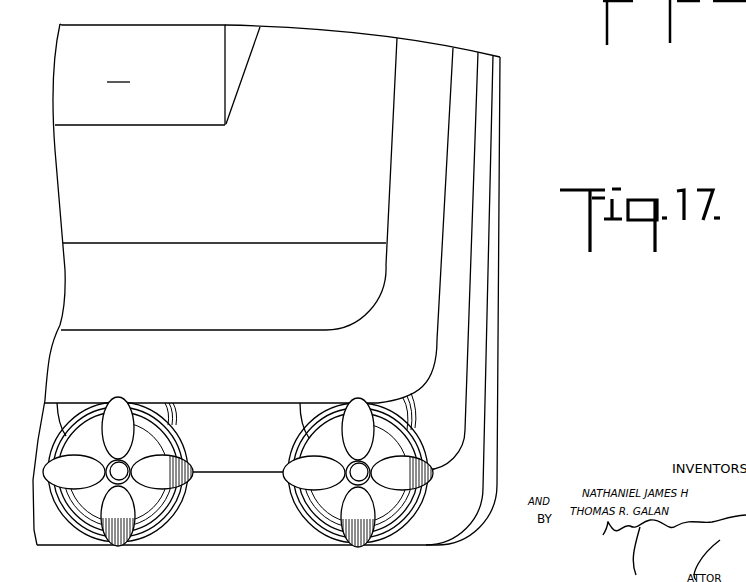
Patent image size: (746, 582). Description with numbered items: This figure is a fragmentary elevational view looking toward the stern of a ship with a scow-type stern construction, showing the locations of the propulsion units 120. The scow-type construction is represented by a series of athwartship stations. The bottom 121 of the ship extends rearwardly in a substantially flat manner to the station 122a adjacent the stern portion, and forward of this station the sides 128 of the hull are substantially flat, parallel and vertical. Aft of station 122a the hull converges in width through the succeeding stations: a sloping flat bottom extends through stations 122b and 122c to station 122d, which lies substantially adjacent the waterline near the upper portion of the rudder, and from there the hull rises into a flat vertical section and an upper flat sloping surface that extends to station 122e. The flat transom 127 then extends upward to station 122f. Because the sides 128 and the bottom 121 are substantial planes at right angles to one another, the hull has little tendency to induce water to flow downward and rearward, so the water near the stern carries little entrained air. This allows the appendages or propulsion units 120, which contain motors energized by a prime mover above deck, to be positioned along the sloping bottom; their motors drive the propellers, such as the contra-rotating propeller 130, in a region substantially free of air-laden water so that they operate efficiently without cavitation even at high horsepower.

The appendage or propulsion unit 120 is at (160, 523).
The bottom of the ship 121 is at (255, 546).
The station 122a is at (483, 505).
The station 122b is at (465, 440).
The station 122c is at (426, 378).
The station 122d is at (386, 279).
The station 122e is at (172, 125).
The station 122f is at (202, 25).
The flat transom 127 is at (142, 74).
The sides of the hull 128 is at (498, 296).
The contra-rotating propeller 130 is at (112, 545).